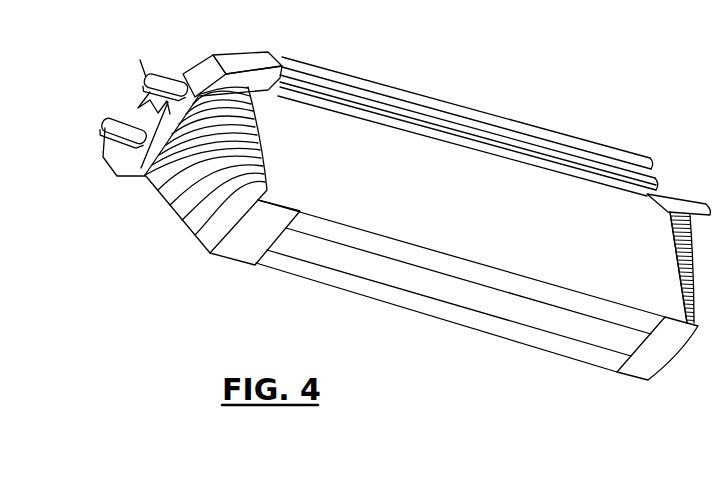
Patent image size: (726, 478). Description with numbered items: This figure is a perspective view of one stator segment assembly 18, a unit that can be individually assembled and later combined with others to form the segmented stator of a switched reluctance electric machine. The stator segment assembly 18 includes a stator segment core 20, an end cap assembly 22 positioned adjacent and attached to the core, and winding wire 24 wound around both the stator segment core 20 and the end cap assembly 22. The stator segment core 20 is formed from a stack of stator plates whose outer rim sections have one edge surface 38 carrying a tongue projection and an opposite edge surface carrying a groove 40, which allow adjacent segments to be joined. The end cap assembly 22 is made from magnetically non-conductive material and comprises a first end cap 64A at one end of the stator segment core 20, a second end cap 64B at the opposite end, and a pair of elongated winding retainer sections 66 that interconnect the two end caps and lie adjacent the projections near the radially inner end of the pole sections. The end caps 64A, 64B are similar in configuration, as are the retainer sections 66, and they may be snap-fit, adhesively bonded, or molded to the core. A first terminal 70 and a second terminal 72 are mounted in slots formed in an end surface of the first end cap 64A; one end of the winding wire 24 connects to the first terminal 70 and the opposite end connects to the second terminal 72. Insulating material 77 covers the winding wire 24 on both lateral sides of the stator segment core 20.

The stator segment assembly 18 is at (508, 85).
The stator segment core 20 is at (393, 82).
The end cap assembly 22 is at (197, 50).
The winding wire 24 is at (165, 192).
The edge surface 38 is at (332, 77).
The groove 40 is at (605, 148).
The first end cap 64A is at (232, 67).
The second end cap 64B is at (680, 207).
The winding retainer sections 66 is at (400, 250).
The first terminal 70 is at (98, 138).
The second terminal 72 is at (152, 75).
The insulating material 77 is at (388, 173).